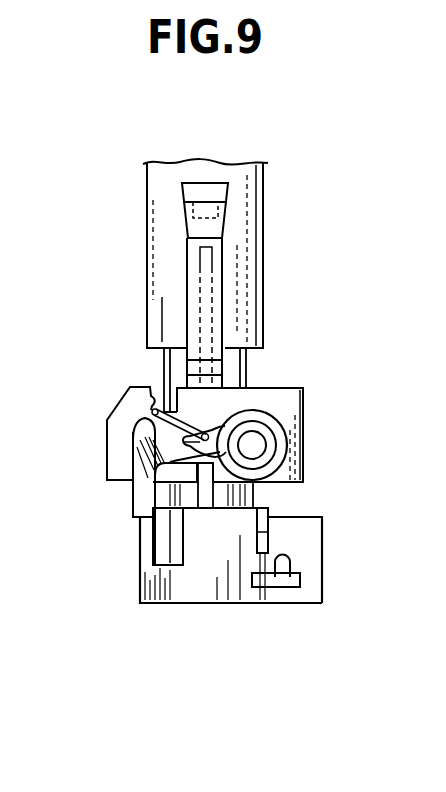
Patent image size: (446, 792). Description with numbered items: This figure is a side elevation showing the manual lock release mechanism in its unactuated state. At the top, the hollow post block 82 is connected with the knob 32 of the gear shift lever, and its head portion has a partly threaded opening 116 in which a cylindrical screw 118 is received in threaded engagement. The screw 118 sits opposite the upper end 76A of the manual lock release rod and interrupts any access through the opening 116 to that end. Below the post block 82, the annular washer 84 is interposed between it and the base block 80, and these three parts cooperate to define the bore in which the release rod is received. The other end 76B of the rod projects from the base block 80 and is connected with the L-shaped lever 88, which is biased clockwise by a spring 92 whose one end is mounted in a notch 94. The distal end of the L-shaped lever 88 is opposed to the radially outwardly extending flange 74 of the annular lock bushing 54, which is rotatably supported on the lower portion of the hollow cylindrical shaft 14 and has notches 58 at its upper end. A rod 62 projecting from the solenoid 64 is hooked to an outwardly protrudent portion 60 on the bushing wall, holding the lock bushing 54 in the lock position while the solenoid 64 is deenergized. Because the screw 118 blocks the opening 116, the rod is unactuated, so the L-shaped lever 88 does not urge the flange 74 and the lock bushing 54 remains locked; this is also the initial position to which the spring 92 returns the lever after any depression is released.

The hollow cylindrical shaft 14 is at (237, 368).
The knob 32 is at (250, 222).
The lock bushing 54 is at (205, 578).
The notches 58 is at (270, 532).
The outwardly protrudent portion 60 is at (268, 577).
The rod 62 is at (288, 565).
The solenoid 64 is at (308, 533).
The radially outwardly extending flange 74 is at (160, 542).
The end of manual lock release rod 76A is at (202, 263).
The other end of manual lock release rod 76B is at (183, 442).
The base block 80 is at (293, 404).
The hollow post block 82 is at (222, 295).
The annular washer 84 is at (190, 368).
The L-shaped lever 88 is at (140, 480).
The spring 92 is at (148, 422).
The notch 94 is at (153, 410).
The partly threaded opening 116 is at (196, 190).
The screw 118 is at (210, 183).